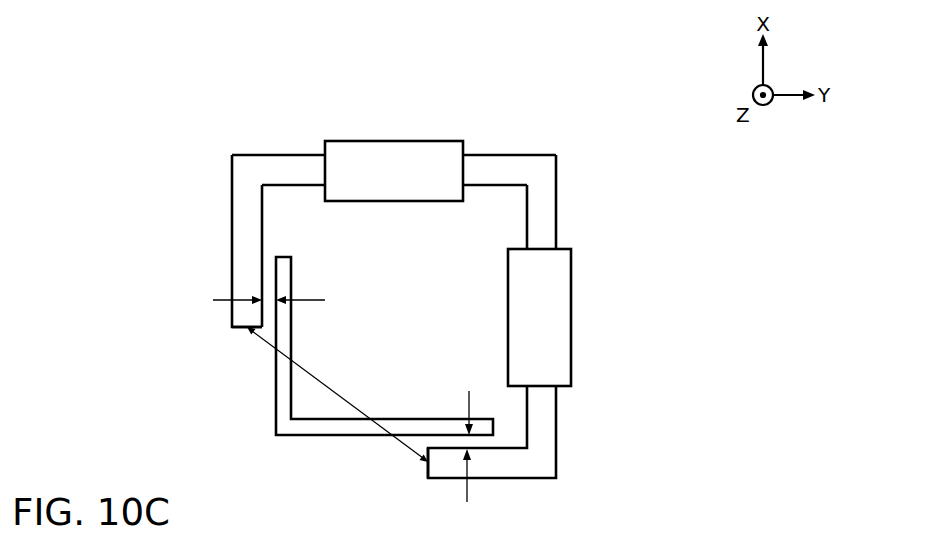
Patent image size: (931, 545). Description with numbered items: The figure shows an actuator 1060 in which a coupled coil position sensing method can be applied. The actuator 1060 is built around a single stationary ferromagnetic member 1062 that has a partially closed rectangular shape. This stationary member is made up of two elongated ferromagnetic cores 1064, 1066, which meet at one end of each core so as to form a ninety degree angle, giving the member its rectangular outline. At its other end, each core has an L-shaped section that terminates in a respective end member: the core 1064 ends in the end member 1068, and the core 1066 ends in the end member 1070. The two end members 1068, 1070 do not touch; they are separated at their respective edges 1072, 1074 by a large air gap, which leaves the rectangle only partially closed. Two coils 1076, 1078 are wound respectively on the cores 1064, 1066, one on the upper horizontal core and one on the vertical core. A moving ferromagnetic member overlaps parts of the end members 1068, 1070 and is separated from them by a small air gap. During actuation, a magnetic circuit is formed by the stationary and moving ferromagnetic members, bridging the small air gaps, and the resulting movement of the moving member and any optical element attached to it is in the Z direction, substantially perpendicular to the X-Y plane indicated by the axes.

The actuator 1060 is at (190, 73).
The stationary ferromagnetic member 1062 is at (517, 155).
The elongated ferromagnetic core 1064 is at (263, 155).
The elongated ferromagnetic core 1066 is at (556, 210).
The end member 1068 is at (232, 216).
The end member 1070 is at (541, 453).
The edge 1072 is at (240, 330).
The edge 1074 is at (428, 465).
The coil 1076 is at (418, 141).
The coil 1078 is at (571, 312).